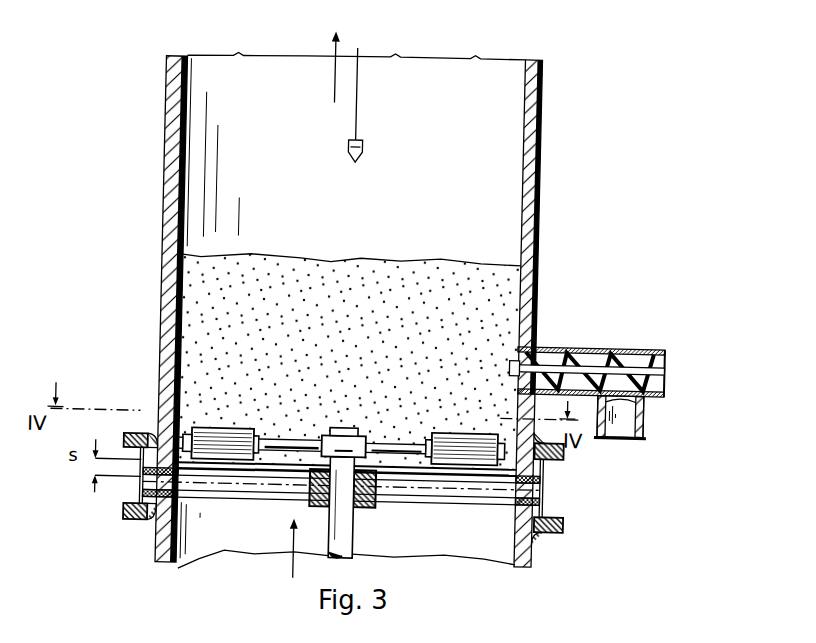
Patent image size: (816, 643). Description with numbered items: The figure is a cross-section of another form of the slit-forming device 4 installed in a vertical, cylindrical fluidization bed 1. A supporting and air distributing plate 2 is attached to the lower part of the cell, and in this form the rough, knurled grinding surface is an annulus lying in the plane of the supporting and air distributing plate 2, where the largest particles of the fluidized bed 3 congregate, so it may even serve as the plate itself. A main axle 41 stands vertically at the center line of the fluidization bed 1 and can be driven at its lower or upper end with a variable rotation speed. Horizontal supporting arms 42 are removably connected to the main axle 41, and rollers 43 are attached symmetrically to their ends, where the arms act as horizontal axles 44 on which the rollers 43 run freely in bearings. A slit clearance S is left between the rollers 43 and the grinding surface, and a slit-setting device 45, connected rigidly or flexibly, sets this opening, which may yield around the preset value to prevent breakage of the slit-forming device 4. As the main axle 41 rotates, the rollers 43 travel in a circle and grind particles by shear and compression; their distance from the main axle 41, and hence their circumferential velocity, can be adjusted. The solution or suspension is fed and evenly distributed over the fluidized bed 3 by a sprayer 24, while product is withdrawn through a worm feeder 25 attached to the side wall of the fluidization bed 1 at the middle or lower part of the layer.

The fluidization bed 1 is at (176, 119).
The supporting and air distributing plate 2 is at (238, 488).
The fluidized bed 3 is at (271, 268).
The slit-forming device 4 is at (325, 434).
The sprayer 24 is at (360, 151).
The worm feeder 25 is at (608, 343).
The main axle 41 is at (352, 538).
The supporting arms 42 is at (415, 470).
The rollers 43 is at (221, 437).
The axles 44 is at (160, 446).
The slit-setting device 45 is at (362, 430).